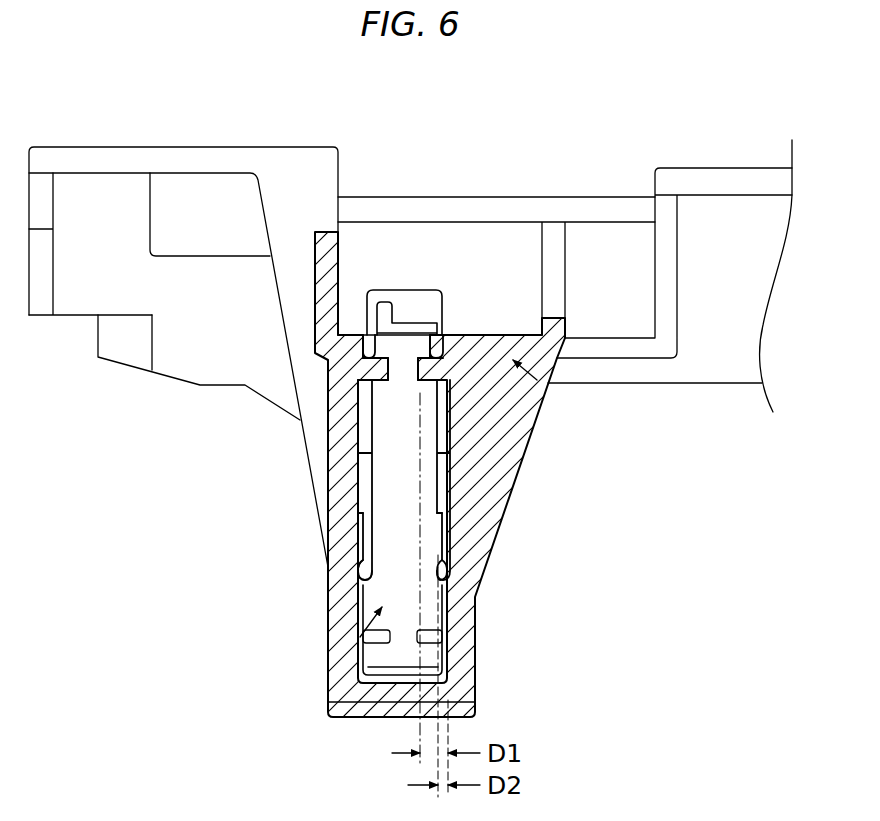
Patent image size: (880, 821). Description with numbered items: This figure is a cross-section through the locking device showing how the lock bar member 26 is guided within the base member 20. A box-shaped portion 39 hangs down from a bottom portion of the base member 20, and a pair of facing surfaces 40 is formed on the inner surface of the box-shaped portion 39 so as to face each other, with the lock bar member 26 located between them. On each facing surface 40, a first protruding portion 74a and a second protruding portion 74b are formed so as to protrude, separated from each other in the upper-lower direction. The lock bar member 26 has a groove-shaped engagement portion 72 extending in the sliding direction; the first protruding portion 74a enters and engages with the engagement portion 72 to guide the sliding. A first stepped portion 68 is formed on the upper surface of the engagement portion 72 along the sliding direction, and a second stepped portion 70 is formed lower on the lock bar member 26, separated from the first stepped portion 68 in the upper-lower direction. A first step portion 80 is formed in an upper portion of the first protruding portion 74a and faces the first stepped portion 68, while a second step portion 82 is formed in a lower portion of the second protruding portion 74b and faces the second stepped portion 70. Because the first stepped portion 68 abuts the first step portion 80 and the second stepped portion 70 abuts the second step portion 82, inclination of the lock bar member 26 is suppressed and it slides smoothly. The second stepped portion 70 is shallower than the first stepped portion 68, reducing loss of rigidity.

The base member 20 is at (553, 378).
The lock bar member 26 is at (362, 680).
The box-shaped portion 39 is at (328, 652).
The facing surface 40 is at (357, 493).
The first stepped portion 68 is at (383, 328).
The second stepped portion 70 is at (361, 587).
The engagement portion 72 is at (398, 330).
The first protruding portion 74a is at (380, 368).
The second protruding portion 74b is at (363, 523).
The first step portion 80 is at (363, 350).
The second step portion 82 is at (359, 553).